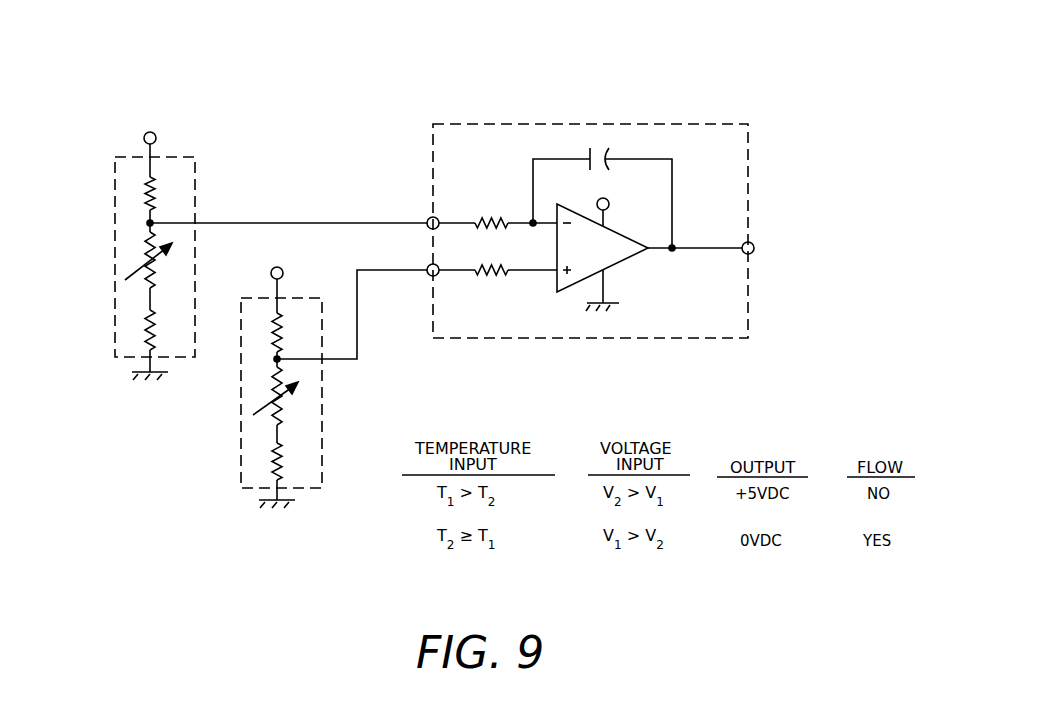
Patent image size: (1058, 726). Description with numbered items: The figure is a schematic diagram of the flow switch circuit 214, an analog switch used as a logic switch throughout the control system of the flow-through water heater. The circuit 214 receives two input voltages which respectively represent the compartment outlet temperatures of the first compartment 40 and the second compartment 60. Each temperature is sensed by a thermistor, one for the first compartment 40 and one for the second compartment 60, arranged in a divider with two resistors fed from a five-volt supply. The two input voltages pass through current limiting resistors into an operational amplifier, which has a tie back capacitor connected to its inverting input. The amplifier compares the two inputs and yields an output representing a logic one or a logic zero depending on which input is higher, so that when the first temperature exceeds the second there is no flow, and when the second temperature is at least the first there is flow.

The flow switch circuit 214 is at (267, 103).
The first compartment 40 is at (112, 213).
The second compartment 60 is at (238, 413).